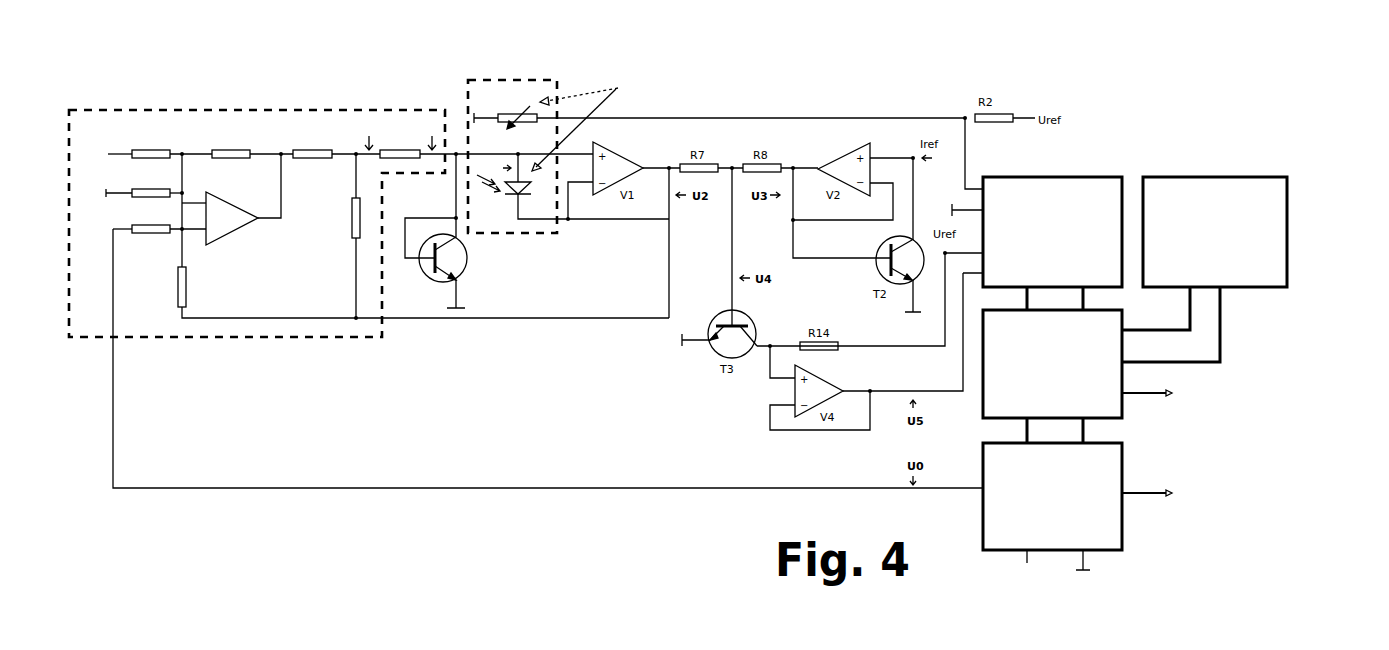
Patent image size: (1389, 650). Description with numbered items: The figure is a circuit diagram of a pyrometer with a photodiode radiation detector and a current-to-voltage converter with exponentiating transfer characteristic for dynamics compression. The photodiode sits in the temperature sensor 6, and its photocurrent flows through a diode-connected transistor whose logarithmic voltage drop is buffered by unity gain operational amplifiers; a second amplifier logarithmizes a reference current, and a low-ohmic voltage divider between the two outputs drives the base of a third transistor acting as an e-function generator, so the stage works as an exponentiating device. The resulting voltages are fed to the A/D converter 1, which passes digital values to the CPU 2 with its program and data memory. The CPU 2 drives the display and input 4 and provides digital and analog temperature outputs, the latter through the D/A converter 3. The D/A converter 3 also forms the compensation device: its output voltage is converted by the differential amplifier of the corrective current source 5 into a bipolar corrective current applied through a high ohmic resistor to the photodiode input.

The A/D converter 1 is at (1102, 192).
The CPU 2 is at (1107, 406).
The D/A converter 3 is at (1107, 538).
The display and input 4 is at (1270, 192).
The corrective current source 5 is at (273, 123).
The temperature sensor 6 is at (487, 92).